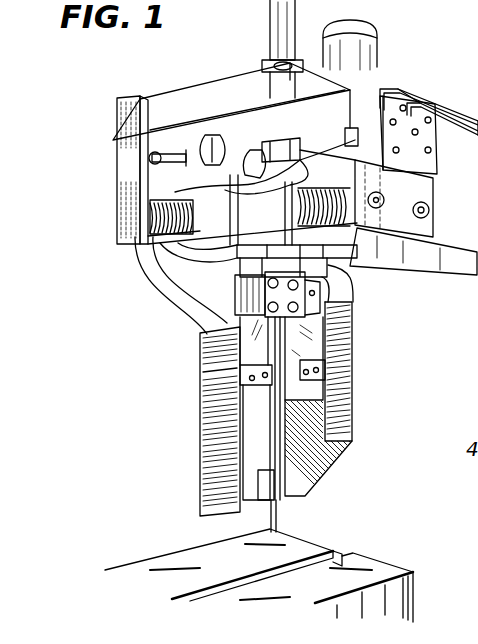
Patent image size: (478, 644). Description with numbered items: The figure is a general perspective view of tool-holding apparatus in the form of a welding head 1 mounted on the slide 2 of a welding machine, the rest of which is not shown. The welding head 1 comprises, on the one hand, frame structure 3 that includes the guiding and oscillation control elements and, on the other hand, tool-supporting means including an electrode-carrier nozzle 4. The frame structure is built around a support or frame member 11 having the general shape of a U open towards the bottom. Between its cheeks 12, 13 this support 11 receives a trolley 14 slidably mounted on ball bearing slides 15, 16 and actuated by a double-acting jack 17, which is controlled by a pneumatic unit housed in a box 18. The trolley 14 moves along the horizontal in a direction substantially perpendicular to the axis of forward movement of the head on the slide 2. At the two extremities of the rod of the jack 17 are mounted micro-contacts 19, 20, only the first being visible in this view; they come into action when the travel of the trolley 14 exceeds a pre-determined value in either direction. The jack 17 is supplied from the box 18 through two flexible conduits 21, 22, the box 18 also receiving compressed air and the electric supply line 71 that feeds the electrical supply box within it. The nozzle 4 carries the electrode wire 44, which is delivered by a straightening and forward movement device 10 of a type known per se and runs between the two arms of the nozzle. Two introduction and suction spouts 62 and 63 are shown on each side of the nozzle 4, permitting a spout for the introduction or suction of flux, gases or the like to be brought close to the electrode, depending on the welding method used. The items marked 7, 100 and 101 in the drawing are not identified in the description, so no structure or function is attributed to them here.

The welding head 1 is at (162, 317).
The slide 2 is at (455, 270).
The frame structure 3 is at (425, 92).
The electrode-carrier nozzle 4 is at (190, 470).
The guide rod 7 is at (473, 112).
The straightening and forward movement device 10 is at (266, 62).
The support or frame member 11 is at (201, 102).
The cheek 12 is at (355, 105).
The cheek 13 is at (143, 197).
The trolley 14 is at (219, 258).
The ball bearing slide 15 is at (390, 200).
The ball bearing slide 16 is at (430, 212).
The double-acting jack 17 is at (247, 147).
The box 18 is at (437, 145).
The micro-contact 19 is at (152, 158).
The micro-contact 20 is at (345, 140).
The flexible conduit 21 is at (207, 160).
The flexible conduit 22 is at (265, 148).
The electrode wire 44 is at (268, 518).
The introduction and suction spout 62 is at (203, 434).
The introduction and suction spout 63 is at (352, 388).
The electric supply line 71 is at (440, 104).
The work table 100 is at (305, 546).
The adjacent table 101 is at (389, 572).